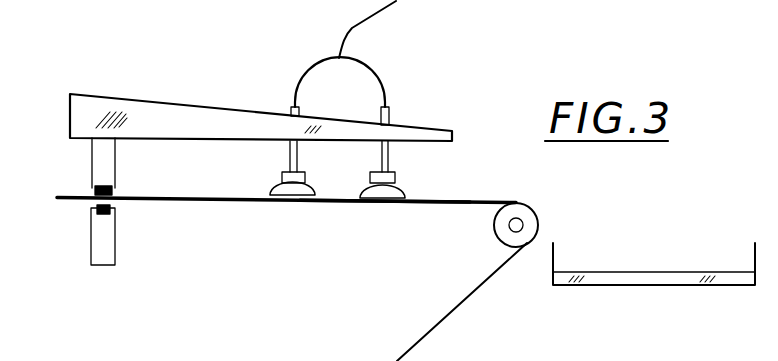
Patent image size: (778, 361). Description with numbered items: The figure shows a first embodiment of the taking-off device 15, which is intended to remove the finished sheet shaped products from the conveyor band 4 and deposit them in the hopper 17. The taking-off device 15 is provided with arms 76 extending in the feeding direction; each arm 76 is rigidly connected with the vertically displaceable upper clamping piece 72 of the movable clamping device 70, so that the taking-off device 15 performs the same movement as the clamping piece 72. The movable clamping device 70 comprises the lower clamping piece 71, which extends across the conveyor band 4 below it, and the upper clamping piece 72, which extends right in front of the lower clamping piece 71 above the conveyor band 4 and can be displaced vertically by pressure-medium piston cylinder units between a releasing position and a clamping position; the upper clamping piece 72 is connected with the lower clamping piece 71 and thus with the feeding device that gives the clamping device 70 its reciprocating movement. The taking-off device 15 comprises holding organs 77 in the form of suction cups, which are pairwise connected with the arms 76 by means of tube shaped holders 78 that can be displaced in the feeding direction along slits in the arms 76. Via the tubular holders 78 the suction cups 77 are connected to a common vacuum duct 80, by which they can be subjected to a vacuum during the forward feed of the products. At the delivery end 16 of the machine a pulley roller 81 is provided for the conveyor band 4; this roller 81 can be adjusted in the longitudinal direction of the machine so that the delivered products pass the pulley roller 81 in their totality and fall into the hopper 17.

The arm 76 is at (163, 118).
The vacuum duct 80 is at (351, 27).
The taking-off device 15 is at (404, 107).
The tube shaped holder 78 is at (383, 157).
The holding organ 77 is at (378, 192).
The upper clamping piece 72 is at (103, 163).
The lower clamping piece 71 is at (103, 245).
The movable clamping device 70 is at (79, 202).
The conveyor band 4 is at (470, 210).
The pulley roller 81 is at (521, 220).
The delivery end 16 is at (513, 262).
The hopper 17 is at (730, 289).